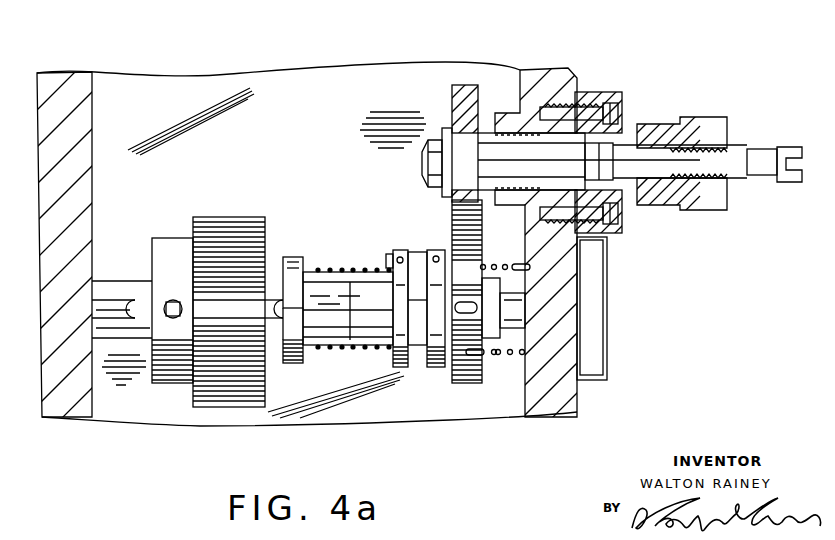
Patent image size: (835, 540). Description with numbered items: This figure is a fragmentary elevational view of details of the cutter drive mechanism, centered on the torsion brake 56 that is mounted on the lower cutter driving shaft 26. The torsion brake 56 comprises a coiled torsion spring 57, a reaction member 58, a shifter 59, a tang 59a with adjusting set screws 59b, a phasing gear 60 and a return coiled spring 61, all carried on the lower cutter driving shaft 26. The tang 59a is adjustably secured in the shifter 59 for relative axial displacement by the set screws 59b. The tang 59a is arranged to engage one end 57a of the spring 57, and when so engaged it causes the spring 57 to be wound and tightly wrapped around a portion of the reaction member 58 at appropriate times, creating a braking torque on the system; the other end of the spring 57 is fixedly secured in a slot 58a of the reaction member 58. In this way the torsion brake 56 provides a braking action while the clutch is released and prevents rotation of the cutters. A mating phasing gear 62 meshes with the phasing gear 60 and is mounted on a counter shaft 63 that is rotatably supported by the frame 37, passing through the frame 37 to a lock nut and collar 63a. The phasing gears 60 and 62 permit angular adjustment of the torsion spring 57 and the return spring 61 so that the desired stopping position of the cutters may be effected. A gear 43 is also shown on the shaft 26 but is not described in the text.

The lower cutter driving shaft 26 is at (131, 256).
The frame 37 is at (553, 83).
The gear 43 is at (249, 198).
The torsion brake 56 is at (344, 249).
The coiled torsion spring 57 is at (366, 346).
The end of spring 57a is at (392, 256).
The reaction member 58 is at (290, 258).
The slot 58a is at (298, 312).
The shifter 59 is at (436, 370).
The tang 59a is at (418, 258).
The adjusting set screws 59b is at (399, 250).
The phasing gear 60 is at (460, 383).
The return coiled spring 61 is at (498, 355).
The mating phasing gear 62 is at (452, 100).
The counter shaft 63 is at (740, 157).
The lock nut and collar 63a is at (719, 95).